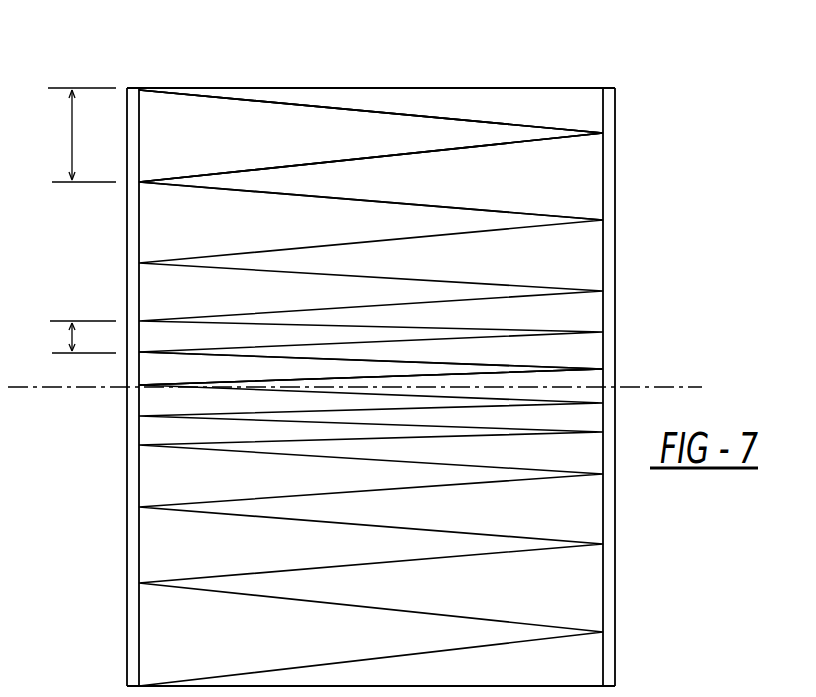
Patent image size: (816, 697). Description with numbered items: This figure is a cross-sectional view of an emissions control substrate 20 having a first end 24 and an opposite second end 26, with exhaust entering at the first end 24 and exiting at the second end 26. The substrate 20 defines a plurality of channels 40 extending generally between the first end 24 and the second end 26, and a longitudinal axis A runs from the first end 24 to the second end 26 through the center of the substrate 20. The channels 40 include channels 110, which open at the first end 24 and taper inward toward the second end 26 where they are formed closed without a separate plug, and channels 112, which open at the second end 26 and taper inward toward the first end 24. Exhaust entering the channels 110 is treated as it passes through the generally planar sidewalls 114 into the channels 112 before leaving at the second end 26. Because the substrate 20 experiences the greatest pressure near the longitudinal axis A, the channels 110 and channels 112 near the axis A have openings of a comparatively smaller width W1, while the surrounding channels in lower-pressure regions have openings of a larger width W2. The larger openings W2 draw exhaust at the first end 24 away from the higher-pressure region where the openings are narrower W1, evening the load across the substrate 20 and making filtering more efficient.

The emissions control substrate 20 is at (292, 56).
The first end 24 is at (135, 87).
The second end 26 is at (609, 87).
The channels 40 is at (430, 63).
The channels 110 is at (160, 132).
The channels 112 is at (569, 158).
The sidewalls 114 is at (240, 173).
The longitudinal axis A is at (666, 386).
The width W1 is at (70, 338).
The width W2 is at (73, 135).